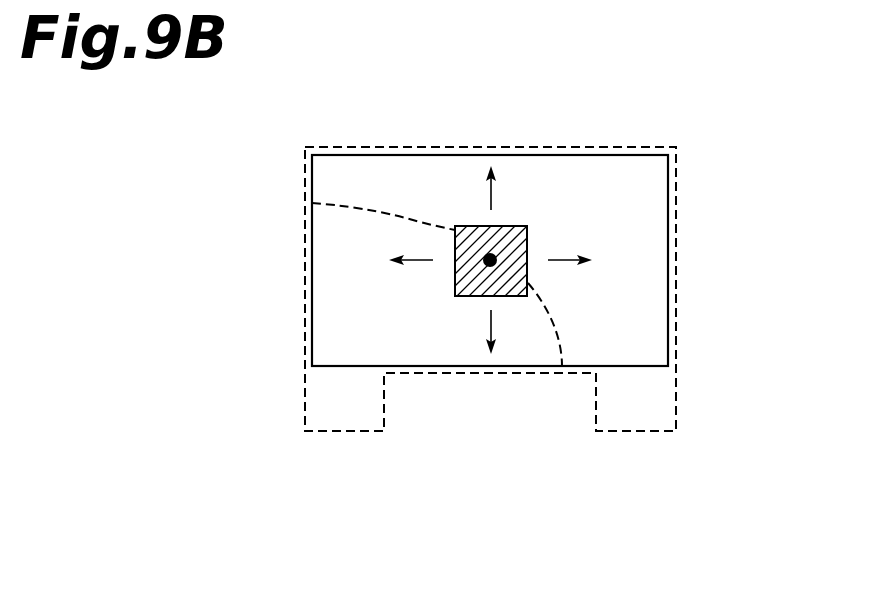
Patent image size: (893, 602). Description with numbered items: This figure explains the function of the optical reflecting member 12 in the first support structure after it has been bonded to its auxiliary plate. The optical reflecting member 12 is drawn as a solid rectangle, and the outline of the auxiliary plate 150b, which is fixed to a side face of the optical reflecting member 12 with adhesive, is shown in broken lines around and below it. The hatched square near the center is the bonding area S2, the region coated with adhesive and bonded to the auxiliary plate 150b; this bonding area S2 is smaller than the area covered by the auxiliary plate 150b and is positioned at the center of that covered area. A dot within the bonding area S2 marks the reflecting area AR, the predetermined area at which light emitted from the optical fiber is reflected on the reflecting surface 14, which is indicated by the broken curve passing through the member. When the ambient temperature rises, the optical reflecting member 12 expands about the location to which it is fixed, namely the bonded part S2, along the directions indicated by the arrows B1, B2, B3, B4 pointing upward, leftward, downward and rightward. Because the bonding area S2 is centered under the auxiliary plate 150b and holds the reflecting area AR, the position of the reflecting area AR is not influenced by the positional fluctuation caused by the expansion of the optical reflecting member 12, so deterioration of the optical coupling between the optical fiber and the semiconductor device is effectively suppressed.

The optical reflecting member 12 is at (641, 155).
The reflecting surface 14 is at (367, 205).
The reflecting area AR is at (490, 257).
The bonding area S2 is at (527, 237).
The expansion direction arrow B1 is at (491, 197).
The expansion direction arrow B2 is at (418, 262).
The expansion direction arrow B3 is at (491, 327).
The expansion direction arrow B4 is at (563, 260).
The auxiliary plate 150b is at (677, 363).